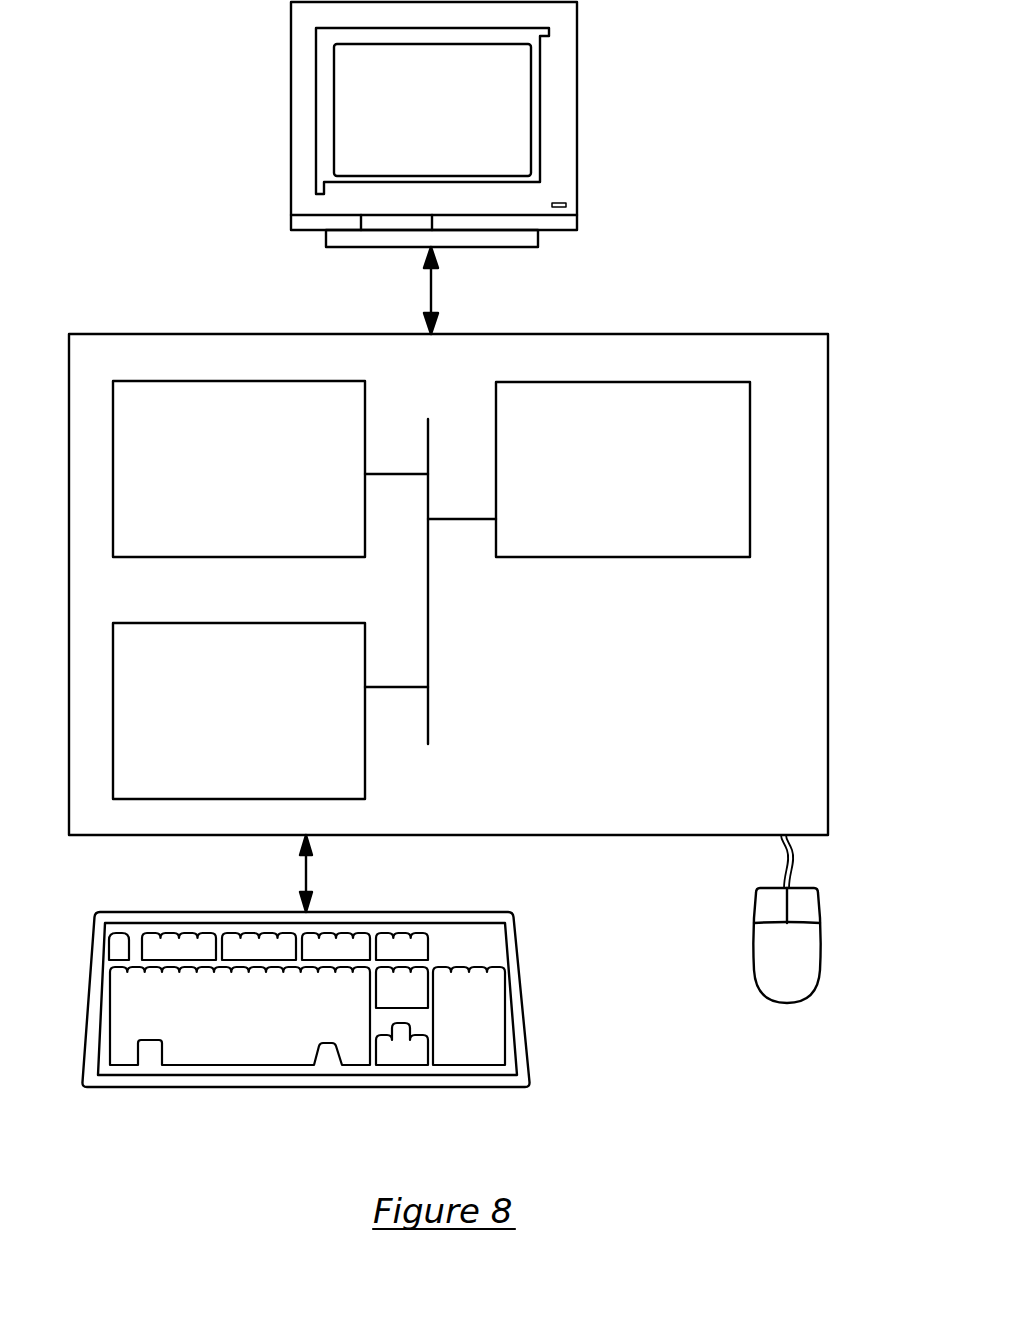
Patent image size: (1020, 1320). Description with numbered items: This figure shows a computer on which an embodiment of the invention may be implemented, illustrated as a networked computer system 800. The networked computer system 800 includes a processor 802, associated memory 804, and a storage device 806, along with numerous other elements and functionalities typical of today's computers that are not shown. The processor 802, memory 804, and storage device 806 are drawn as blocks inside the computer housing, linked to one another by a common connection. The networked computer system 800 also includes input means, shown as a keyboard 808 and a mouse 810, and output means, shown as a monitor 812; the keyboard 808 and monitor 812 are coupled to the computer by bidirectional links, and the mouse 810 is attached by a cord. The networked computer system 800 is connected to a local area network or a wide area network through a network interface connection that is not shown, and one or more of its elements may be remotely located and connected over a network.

The networked computer system 800 is at (793, 210).
The processor 802 is at (604, 472).
The memory 804 is at (217, 481).
The storage device 806 is at (214, 724).
The keyboard 808 is at (207, 1042).
The mouse 810 is at (762, 972).
The monitor 812 is at (407, 128).